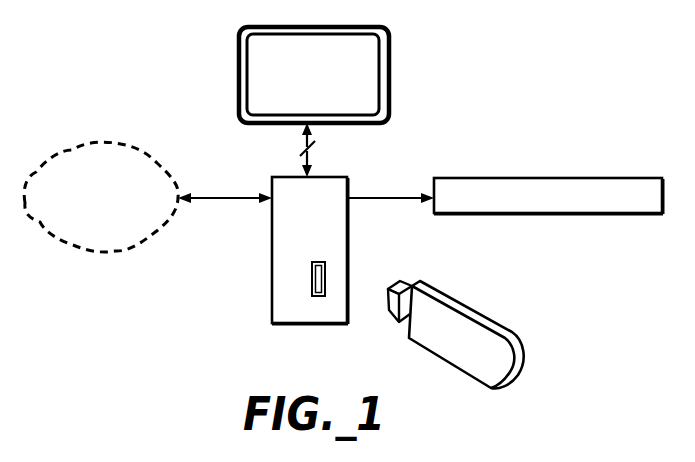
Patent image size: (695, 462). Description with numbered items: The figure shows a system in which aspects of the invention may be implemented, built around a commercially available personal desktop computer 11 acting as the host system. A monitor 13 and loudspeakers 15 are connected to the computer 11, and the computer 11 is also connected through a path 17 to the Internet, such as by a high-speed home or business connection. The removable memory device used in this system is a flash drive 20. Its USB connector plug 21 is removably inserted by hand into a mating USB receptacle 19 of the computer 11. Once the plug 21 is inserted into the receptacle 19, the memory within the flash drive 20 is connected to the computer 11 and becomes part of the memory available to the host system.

The personal desktop computer 11 is at (272, 278).
The monitor 13 is at (389, 90).
The loudspeakers 15 is at (555, 178).
The path 17 is at (233, 195).
The USB receptacle 19 is at (327, 276).
The flash drive 20 is at (481, 303).
The USB connector plug 21 is at (397, 321).